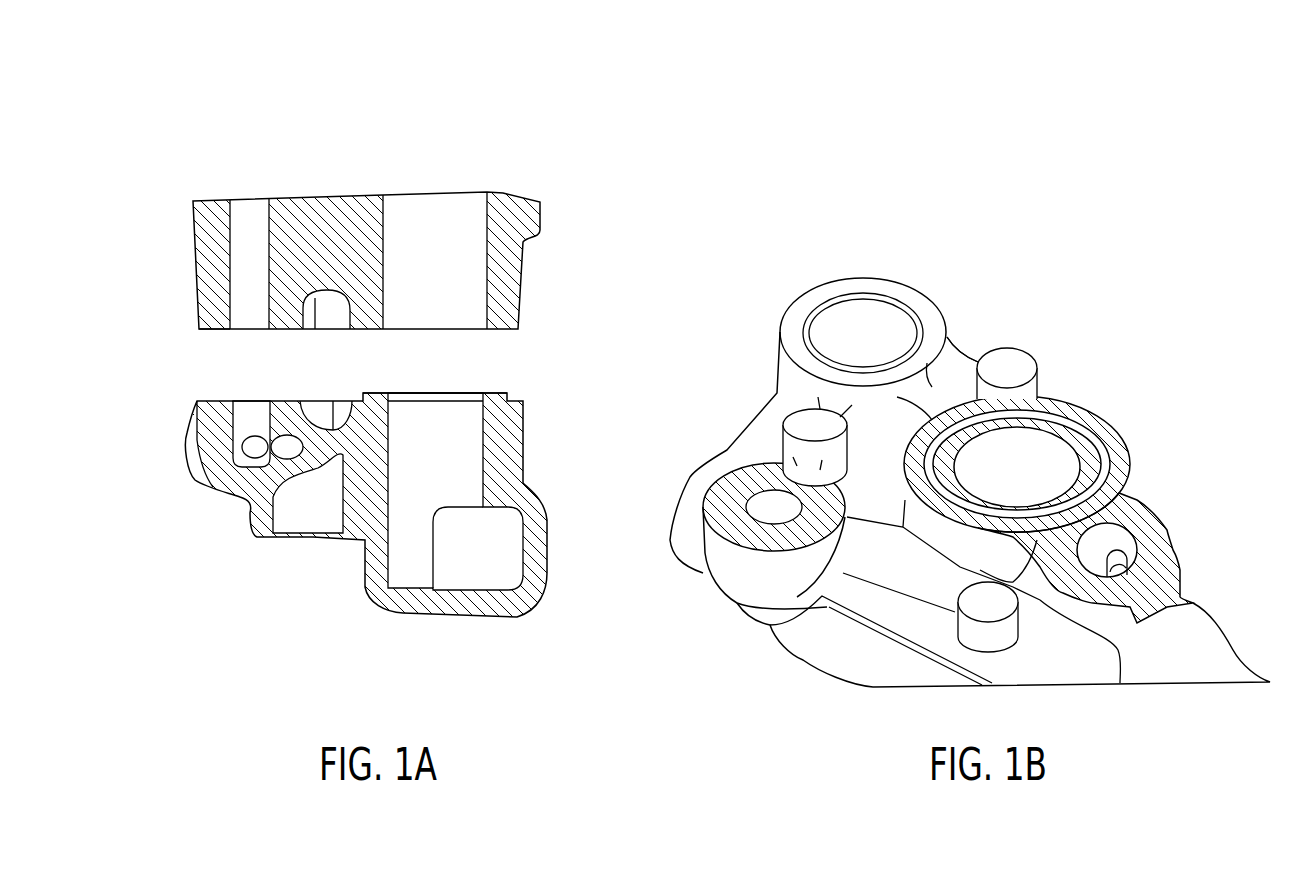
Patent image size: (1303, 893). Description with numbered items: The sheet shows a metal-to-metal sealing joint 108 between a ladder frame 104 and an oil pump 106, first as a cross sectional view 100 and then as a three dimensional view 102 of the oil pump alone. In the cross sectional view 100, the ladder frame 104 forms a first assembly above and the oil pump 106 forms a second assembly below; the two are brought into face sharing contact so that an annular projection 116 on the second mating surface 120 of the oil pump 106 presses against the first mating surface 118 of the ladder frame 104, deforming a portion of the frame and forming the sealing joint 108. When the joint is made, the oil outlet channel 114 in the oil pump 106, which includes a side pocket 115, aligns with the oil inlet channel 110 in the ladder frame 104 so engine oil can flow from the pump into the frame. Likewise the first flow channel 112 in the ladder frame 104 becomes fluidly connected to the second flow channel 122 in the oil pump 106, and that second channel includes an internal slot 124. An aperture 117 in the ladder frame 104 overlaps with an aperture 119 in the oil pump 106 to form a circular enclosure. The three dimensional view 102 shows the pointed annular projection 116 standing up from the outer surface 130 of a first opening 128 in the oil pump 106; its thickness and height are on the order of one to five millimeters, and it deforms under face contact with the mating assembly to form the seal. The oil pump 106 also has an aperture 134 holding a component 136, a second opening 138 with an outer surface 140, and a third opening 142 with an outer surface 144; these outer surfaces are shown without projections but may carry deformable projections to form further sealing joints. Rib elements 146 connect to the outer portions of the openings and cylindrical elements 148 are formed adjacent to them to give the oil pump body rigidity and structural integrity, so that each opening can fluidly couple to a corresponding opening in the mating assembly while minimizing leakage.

In FIG. 1A, the cross sectional view 100 is at (95, 98).
In FIG. 1B, the three dimensional view 102 is at (1247, 162).
In FIG. 1A, the ladder frame 104 is at (307, 260).
In FIG. 1A, the oil pump 106 is at (319, 505).
In FIG. 1B, the oil pump 106 is at (907, 653).
In FIG. 1A, the sealing joint 108 is at (513, 352).
In FIG. 1B, the sealing joint 108 is at (1067, 372).
In FIG. 1A, the oil inlet channel 110 is at (455, 198).
In FIG. 1A, the first flow channel 112 is at (252, 210).
In FIG. 1A, the oil outlet channel 114 is at (435, 470).
In FIG. 1A, the side pocket 115 is at (513, 577).
In FIG. 1A, the annular projection 116 is at (485, 398).
In FIG. 1B, the annular projection 116 is at (1073, 420).
In FIG. 1A, the aperture 117 is at (310, 315).
In FIG. 1A, the first mating surface 118 is at (207, 352).
In FIG. 1A, the aperture 119 is at (343, 407).
In FIG. 1A, the second mating surface 120 is at (283, 405).
In FIG. 1A, the second flow channel 122 is at (245, 410).
In FIG. 1A, the internal slot 124 is at (258, 455).
In FIG. 1B, the first opening 128 is at (1013, 507).
In FIG. 1B, the outer surface 130 is at (1120, 463).
In FIG. 1B, the aperture 134 is at (1090, 550).
In FIG. 1B, the component 136 is at (1123, 563).
In FIG. 1B, the second opening 138 is at (850, 320).
In FIG. 1B, the outer surface 140 is at (910, 302).
In FIG. 1B, the third opening 142 is at (762, 467).
In FIG. 1B, the outer surface 144 is at (732, 473).
In FIG. 1B, the rib elements 146 is at (948, 340).
In FIG. 1B, the cylindrical elements 148 is at (1003, 372).